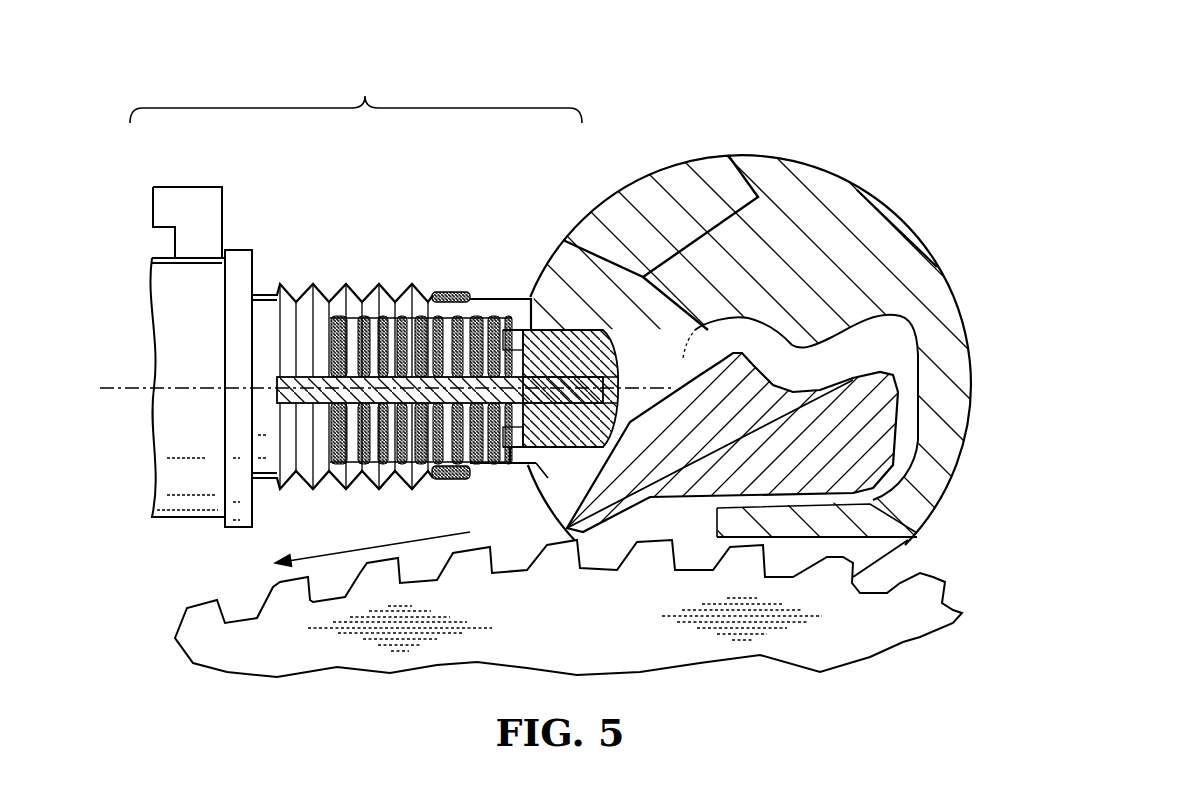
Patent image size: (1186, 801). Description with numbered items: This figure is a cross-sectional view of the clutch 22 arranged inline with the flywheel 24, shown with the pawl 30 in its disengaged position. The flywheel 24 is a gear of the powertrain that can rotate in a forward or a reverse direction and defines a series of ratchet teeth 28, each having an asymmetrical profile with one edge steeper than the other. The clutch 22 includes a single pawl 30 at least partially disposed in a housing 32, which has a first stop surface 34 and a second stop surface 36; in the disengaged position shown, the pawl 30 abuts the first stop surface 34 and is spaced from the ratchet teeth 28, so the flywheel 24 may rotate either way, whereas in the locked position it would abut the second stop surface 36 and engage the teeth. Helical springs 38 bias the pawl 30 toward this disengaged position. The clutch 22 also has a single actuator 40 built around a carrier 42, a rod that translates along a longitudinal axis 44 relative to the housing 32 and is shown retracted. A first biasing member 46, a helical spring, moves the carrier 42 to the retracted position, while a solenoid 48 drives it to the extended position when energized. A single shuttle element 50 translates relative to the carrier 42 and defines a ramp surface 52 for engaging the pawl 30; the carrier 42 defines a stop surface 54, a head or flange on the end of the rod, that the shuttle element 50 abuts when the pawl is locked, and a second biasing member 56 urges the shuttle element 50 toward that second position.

The clutch 22 is at (230, 168).
The flywheel 24 is at (170, 620).
The ratchet teeth 28 is at (905, 543).
The pawl 30 is at (849, 368).
The housing 32 is at (537, 268).
The first stop surface 34 is at (537, 493).
The second stop surface 36 is at (873, 332).
The springs 38 is at (747, 355).
The actuator 40 is at (356, 98).
The carrier 42 is at (484, 332).
The longitudinal axis 44 is at (127, 386).
The first biasing member 46 is at (373, 288).
The solenoid 48 is at (162, 292).
The shuttle element 50 is at (596, 332).
The ramp surface 52 is at (667, 494).
The stop surface 54 is at (612, 355).
The second biasing member 56 is at (417, 345).